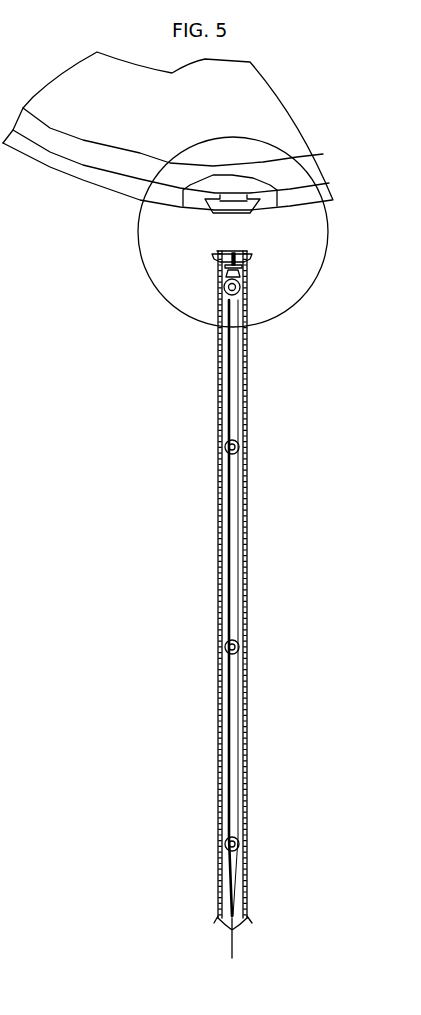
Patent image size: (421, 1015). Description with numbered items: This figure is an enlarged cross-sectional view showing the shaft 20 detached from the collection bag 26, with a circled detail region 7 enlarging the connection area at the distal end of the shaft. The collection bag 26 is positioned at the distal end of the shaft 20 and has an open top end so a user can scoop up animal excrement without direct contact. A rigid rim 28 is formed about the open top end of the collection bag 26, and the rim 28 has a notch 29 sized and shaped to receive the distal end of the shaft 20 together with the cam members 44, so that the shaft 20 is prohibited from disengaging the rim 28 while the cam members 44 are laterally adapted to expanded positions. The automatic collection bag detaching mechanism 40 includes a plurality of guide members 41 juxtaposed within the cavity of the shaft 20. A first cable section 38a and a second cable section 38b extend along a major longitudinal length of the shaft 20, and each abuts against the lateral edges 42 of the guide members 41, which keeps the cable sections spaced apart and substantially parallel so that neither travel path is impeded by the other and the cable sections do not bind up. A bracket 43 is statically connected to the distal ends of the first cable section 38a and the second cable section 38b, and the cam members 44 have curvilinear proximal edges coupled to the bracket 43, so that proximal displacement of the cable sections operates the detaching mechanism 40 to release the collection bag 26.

The detail circle (FIG. 7 region) 7 is at (307, 288).
The shaft 20 is at (262, 742).
The collection bag 26 is at (287, 78).
The rigid rim 28 is at (58, 165).
The notch 29 is at (243, 200).
The first cable section 38a is at (238, 553).
The second cable section 38b is at (227, 560).
The automatic collection bag detaching mechanism 40 is at (220, 238).
The guide members 41 is at (230, 303).
The lateral edges 42 is at (229, 294).
The bracket 43 is at (242, 268).
The cam members 44 is at (240, 256).